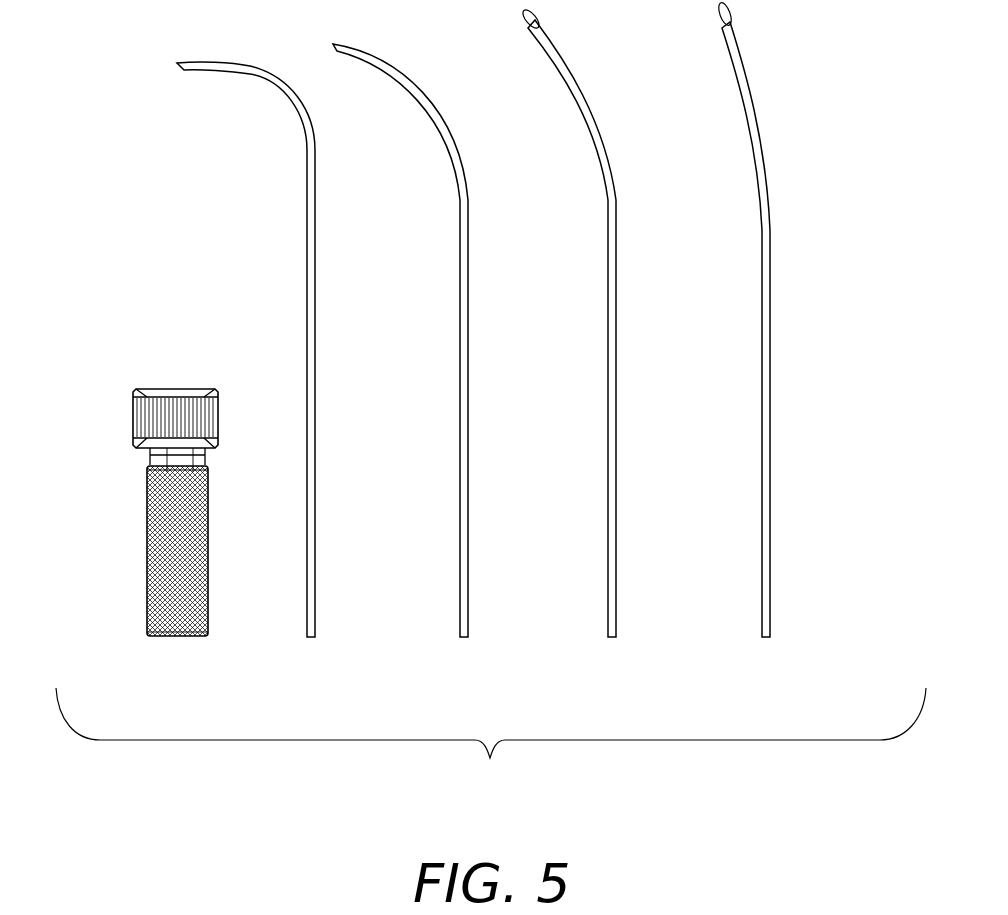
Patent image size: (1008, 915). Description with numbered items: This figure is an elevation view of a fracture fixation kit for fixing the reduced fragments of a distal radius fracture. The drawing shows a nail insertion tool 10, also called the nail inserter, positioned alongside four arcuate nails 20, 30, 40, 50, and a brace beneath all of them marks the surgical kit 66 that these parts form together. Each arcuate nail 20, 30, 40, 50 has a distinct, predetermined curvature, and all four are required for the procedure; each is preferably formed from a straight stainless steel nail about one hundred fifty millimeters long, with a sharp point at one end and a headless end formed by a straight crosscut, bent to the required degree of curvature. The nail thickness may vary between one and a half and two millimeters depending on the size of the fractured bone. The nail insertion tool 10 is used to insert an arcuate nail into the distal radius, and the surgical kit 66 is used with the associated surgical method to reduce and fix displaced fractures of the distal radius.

The nail insertion tool 10 is at (178, 640).
The arcuate nail 20 is at (311, 638).
The arcuate nail 30 is at (464, 638).
The arcuate nail 40 is at (612, 638).
The arcuate nail 50 is at (766, 638).
The surgical kit 66 is at (491, 746).